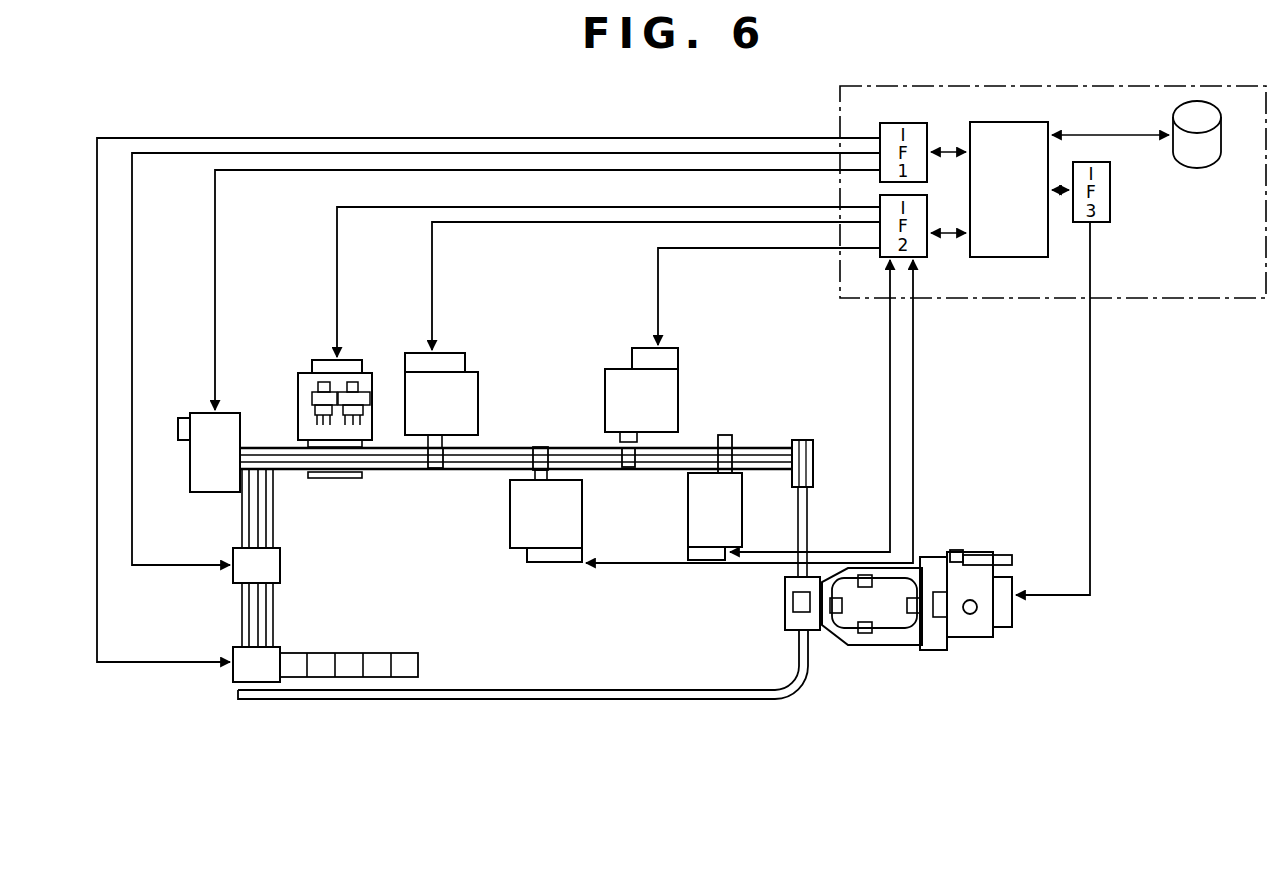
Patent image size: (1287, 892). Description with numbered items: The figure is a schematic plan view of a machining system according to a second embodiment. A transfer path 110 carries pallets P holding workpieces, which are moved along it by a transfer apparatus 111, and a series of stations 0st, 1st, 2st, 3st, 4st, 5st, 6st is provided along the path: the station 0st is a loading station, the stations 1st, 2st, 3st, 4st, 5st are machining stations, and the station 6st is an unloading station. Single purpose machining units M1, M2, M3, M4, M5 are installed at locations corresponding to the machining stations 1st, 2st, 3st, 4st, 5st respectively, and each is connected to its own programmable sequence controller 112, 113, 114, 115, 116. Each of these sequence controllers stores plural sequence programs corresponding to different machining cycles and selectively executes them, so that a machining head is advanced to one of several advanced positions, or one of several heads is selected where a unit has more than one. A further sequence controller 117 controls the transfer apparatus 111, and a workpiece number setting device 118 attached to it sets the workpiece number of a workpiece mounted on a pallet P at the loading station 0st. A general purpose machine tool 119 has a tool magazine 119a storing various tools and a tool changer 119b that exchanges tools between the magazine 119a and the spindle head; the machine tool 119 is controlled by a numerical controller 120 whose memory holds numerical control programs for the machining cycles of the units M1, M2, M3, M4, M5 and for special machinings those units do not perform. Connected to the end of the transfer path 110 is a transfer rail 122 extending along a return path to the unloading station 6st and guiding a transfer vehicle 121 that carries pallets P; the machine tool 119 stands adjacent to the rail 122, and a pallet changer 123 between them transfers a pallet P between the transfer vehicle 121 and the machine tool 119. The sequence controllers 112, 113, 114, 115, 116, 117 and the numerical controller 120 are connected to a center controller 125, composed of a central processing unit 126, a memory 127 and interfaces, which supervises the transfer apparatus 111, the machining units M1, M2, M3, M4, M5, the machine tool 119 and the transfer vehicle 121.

The transfer path 110 is at (510, 438).
The transfer apparatus 111 is at (793, 440).
The programmable sequence controller 112 is at (358, 359).
The programmable sequence controller 113 is at (463, 352).
The programmable sequence controller 114 is at (541, 565).
The programmable sequence controller 115 is at (680, 356).
The programmable sequence controller 116 is at (688, 553).
The sequence controller 117 is at (236, 411).
The workpiece number setting device 118 is at (181, 416).
The general purpose machine tool 119 is at (978, 651).
The tool magazine 119a is at (996, 555).
The tool changer 119b is at (956, 549).
The numerical controller 120 is at (1013, 613).
The transfer vehicle 121 is at (785, 616).
The transfer rail 122 is at (445, 701).
The pallet changer 123 is at (853, 647).
The center controller 125 is at (1196, 300).
The CPU 126 is at (1030, 122).
The memory 127 is at (1213, 163).
The single purpose machining unit M1 is at (298, 380).
The single purpose machining unit M2 is at (473, 381).
The single purpose machining unit M3 is at (510, 546).
The single purpose machining unit M4 is at (665, 401).
The single purpose machining unit M5 is at (742, 500).
The pallet P is at (433, 471).
The loading station 0st is at (282, 566).
The machining station 1st is at (330, 481).
The machining station 2st is at (450, 472).
The machining station 3st is at (551, 441).
The machining station 4st is at (628, 470).
The machining station 5st is at (743, 424).
The unloading station 6st is at (232, 683).